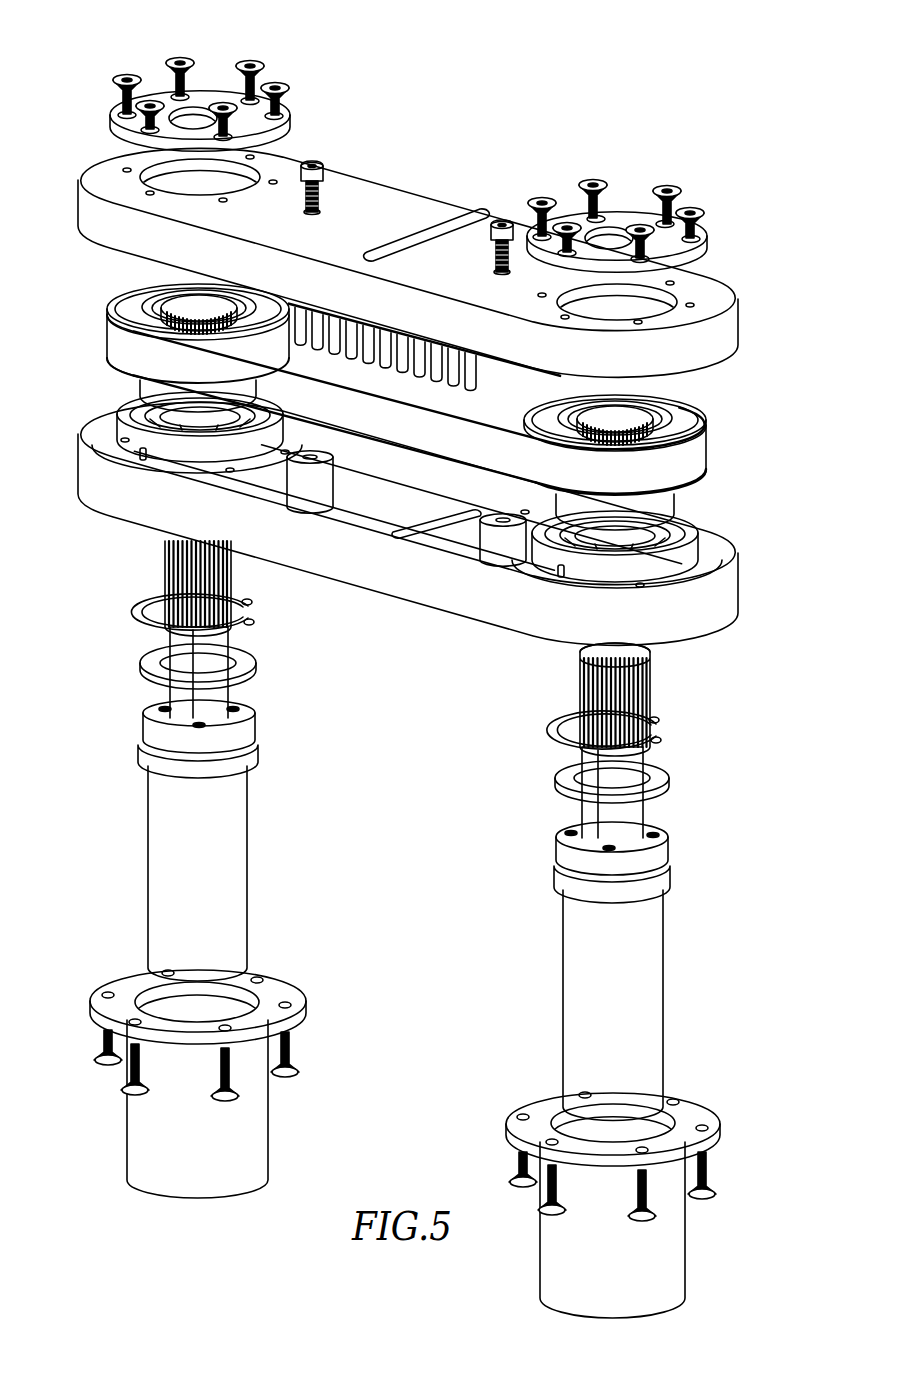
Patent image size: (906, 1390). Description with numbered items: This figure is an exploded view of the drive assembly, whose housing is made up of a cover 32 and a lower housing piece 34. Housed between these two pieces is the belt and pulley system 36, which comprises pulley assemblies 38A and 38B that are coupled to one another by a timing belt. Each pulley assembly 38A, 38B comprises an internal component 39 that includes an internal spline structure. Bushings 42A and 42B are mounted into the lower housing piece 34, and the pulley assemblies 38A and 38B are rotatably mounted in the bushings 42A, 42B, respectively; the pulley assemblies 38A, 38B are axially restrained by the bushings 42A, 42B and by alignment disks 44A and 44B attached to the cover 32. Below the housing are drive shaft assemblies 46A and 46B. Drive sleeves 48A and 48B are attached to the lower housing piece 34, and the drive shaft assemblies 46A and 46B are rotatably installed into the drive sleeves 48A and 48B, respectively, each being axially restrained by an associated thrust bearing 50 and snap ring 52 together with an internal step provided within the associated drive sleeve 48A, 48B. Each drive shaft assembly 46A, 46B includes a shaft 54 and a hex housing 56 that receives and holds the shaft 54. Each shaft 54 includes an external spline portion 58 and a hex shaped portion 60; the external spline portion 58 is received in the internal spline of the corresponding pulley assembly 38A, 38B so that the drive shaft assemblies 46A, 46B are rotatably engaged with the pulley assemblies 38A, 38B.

The cover 32 is at (392, 190).
The lower housing piece 34 is at (440, 600).
The belt and pulley system 36 is at (722, 468).
The pulley assembly 38A is at (140, 323).
The pulley assembly 38B is at (690, 428).
The internal component 39 is at (192, 312).
The bushing 42A is at (122, 430).
The bushing 42B is at (693, 545).
The alignment disk 44A is at (205, 95).
The alignment disk 44B is at (622, 215).
The drive shaft assembly 46A is at (130, 780).
The drive shaft assembly 46B is at (680, 938).
The drive sleeve 48A is at (250, 1115).
The drive sleeve 48B is at (672, 1255).
The thrust bearing 50 is at (250, 655).
The snap ring 52 is at (255, 610).
The shaft 54 is at (172, 545).
The hex housing 56 is at (230, 802).
The external spline portion 58 is at (655, 682).
The hex shaped portion 60 is at (215, 695).